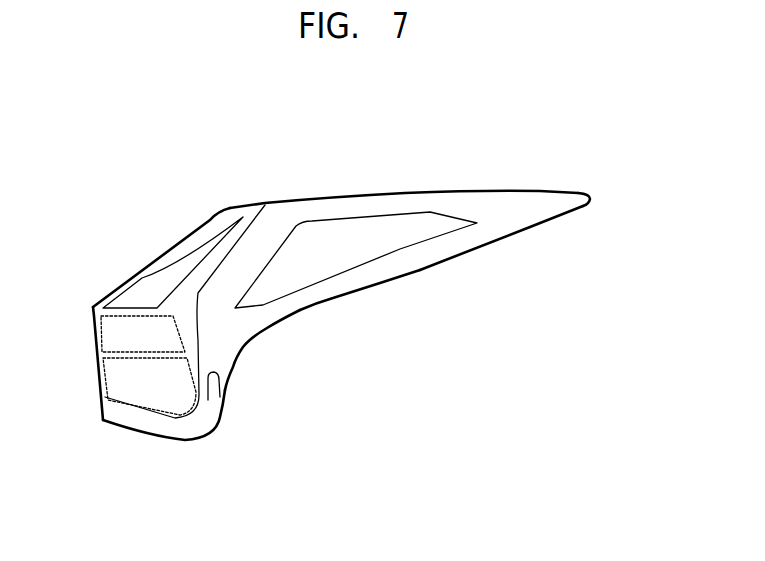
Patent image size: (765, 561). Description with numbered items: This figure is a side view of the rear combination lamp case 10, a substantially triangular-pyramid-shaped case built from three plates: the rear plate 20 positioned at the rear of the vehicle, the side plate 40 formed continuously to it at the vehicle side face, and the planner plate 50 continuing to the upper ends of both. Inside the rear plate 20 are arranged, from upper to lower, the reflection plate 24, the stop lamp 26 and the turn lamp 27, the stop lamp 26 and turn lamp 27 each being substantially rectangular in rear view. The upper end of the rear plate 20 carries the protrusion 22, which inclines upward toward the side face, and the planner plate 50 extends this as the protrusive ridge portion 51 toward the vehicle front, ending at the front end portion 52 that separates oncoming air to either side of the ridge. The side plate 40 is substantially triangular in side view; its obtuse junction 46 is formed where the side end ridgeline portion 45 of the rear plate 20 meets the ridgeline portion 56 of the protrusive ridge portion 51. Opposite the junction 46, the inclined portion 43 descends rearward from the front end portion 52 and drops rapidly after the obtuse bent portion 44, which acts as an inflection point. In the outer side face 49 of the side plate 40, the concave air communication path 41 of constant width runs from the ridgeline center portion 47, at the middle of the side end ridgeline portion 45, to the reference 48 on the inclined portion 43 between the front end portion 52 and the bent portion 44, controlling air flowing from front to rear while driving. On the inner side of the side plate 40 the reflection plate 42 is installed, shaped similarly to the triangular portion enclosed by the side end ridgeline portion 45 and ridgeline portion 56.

The rear combination lamp case 10 is at (107, 149).
The rear plate 20 is at (121, 458).
The protrusion 22 is at (208, 227).
The reflection plate 24 is at (138, 293).
The stop lamp 26 is at (112, 341).
The turn lamp 27 is at (112, 393).
The side plate 40 is at (433, 299).
The air communication path 41 is at (226, 314).
The reflection plate 42 is at (331, 262).
The inclined portion 43 is at (488, 243).
The bent portion 44 is at (250, 344).
The side end ridgeline portion 45 is at (212, 402).
The junction 46 is at (266, 205).
The ridgeline center portion 47 is at (205, 305).
The reference 48 is at (325, 302).
The outer side face 49 is at (520, 225).
The planner plate 50 is at (375, 145).
The protrusive ridge portion 51 is at (395, 197).
The front end portion 52 is at (590, 200).
The ridgeline portion 56 is at (340, 197).